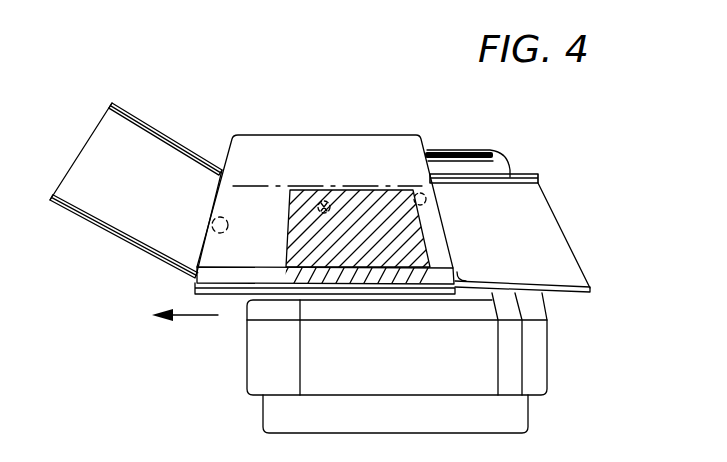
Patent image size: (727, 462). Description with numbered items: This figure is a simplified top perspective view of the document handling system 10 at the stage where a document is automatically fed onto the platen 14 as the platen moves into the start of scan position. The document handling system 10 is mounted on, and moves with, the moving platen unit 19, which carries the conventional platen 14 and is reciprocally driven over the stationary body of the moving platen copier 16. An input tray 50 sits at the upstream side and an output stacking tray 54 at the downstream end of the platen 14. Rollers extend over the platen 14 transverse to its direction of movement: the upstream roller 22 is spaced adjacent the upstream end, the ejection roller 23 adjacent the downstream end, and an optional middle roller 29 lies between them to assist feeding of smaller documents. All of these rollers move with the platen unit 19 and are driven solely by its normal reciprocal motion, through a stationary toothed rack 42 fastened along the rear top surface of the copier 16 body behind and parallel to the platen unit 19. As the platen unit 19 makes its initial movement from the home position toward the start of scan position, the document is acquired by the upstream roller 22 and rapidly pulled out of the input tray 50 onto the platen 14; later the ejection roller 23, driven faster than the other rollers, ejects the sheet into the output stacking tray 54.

The document handling system 10 is at (312, 120).
The platen 14 is at (233, 294).
The moving platen copier 16 is at (267, 383).
The moving platen unit 19 is at (371, 135).
The upstream roller 22 is at (237, 218).
The ejection roller 23 is at (418, 191).
The middle roller 29 is at (327, 198).
The toothed rack 42 is at (480, 151).
The input tray 50 is at (173, 143).
The output stacking tray 54 is at (538, 176).